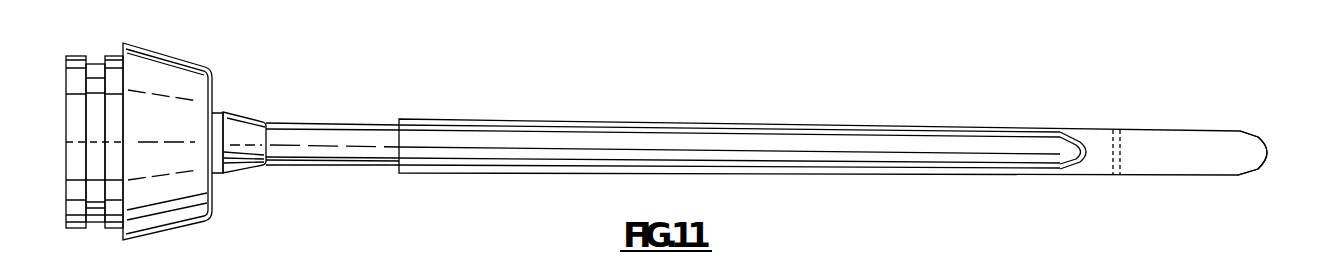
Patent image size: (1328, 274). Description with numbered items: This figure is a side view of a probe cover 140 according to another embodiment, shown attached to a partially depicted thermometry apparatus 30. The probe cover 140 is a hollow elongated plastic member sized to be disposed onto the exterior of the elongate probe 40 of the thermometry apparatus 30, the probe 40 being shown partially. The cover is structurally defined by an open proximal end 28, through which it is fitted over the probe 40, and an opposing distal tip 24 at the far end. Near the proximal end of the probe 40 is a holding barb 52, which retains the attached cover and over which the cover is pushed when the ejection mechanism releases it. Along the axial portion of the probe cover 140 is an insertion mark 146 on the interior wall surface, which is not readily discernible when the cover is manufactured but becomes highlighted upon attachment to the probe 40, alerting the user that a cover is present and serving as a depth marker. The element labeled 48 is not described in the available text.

The thermometry apparatus 30 is at (193, 53).
The holding barb 52 is at (248, 173).
The probe 40 is at (339, 123).
The open proximal end 28 is at (398, 120).
The probe cover 140 is at (770, 122).
The distal tip of inner tube 48 is at (1076, 165).
The insertion mark 146 is at (1115, 130).
The distal tip 24 is at (1254, 176).